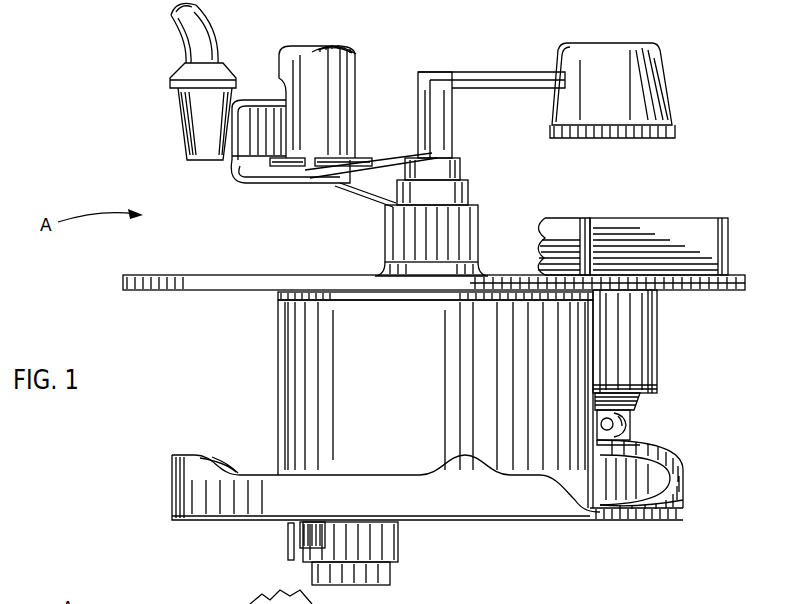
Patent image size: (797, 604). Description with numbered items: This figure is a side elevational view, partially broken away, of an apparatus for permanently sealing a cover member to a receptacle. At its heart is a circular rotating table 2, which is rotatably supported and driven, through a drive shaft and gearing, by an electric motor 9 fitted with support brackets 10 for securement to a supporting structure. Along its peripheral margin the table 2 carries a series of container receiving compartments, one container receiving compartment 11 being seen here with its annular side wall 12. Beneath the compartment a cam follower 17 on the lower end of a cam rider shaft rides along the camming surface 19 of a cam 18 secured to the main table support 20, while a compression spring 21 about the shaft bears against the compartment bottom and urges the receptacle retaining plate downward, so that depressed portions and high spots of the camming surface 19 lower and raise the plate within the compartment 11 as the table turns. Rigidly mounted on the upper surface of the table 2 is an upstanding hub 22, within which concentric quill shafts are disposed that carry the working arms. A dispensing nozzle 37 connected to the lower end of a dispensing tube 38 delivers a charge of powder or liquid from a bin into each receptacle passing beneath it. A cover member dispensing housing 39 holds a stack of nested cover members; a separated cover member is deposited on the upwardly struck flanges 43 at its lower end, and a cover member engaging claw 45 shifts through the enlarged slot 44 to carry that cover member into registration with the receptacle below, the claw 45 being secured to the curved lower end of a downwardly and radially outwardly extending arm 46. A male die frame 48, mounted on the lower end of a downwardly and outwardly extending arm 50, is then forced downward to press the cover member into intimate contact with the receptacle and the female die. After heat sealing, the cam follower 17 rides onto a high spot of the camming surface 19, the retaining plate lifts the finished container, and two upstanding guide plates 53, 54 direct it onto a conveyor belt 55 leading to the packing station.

The rotating table 2 is at (128, 291).
The electric motor 9 is at (396, 566).
The support brackets 10 is at (288, 556).
The container receiving compartment 11 is at (657, 325).
The annular side wall 12 is at (657, 384).
The cam follower 17 is at (632, 426).
The cam 18 is at (676, 468).
The camming surface 19 is at (672, 484).
The main table support 20 is at (278, 345).
The compression spring 21 is at (637, 403).
The upstanding hub 22 is at (385, 272).
The dispensing nozzle 37 is at (178, 134).
The dispensing tube 38 is at (178, 28).
The cover member dispensing housing 39 is at (350, 48).
The upwardly struck flanges 43 is at (368, 158).
The enlarged slot 44 is at (352, 107).
The cover member engaging claw 45 is at (248, 98).
The arm 46 is at (262, 183).
The male die frame 48 is at (661, 55).
The arm 50 is at (500, 72).
The guide plate 53 is at (561, 216).
The guide plate 54 is at (663, 216).
The conveyor belt 55 is at (220, 603).